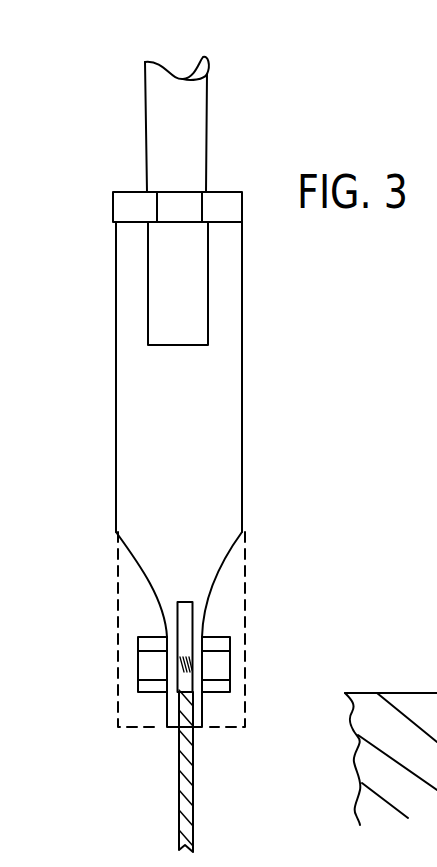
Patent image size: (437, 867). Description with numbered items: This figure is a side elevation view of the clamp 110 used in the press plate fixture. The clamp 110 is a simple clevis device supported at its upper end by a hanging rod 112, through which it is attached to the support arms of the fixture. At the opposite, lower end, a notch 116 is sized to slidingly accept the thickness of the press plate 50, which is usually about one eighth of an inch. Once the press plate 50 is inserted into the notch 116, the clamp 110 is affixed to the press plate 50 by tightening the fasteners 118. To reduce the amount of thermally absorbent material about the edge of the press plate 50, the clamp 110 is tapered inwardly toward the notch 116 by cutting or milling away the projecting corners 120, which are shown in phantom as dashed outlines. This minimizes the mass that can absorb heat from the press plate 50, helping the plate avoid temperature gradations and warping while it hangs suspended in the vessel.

The hanging rod 112 is at (177, 147).
The clamp 110 is at (205, 380).
The notch 116 is at (182, 637).
The fastener 118 is at (228, 658).
The projecting corner 120 is at (233, 707).
The press plate 50 is at (185, 770).